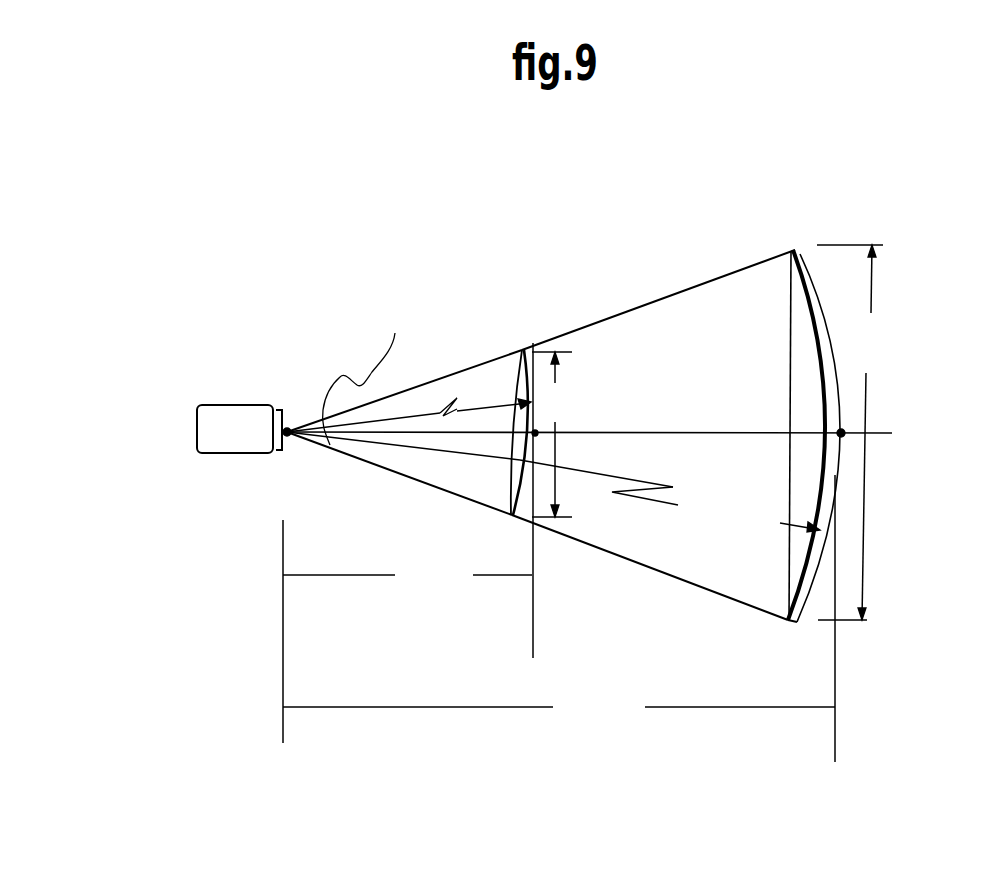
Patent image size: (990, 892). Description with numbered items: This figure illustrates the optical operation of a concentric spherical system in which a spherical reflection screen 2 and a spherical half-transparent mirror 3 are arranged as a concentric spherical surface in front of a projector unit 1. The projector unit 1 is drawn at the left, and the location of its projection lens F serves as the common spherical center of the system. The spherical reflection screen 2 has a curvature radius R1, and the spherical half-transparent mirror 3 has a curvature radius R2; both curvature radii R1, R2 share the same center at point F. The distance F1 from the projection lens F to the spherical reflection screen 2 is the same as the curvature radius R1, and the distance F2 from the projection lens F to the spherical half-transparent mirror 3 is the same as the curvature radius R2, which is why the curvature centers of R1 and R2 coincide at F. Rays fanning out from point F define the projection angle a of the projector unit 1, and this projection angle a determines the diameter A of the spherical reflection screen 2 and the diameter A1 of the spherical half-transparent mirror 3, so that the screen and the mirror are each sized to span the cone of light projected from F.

The projector unit 1 is at (268, 342).
The spherical reflection screen 2 is at (575, 416).
The spherical half-transparent mirror 3 is at (867, 371).
The projection angle a is at (377, 360).
The projection lens F is at (286, 475).
The curvature radius of the spherical reflection screen R1 is at (409, 412).
The curvature radius of the spherical half-transparent mirror R2 is at (553, 492).
The diameter of the spherical reflection screen A is at (574, 434).
The diameter of the spherical half-transparent mirror A1 is at (877, 432).
The distance from F to the spherical reflection screen F1 is at (407, 631).
The distance from F to the spherical half-transparent mirror F2 is at (559, 618).